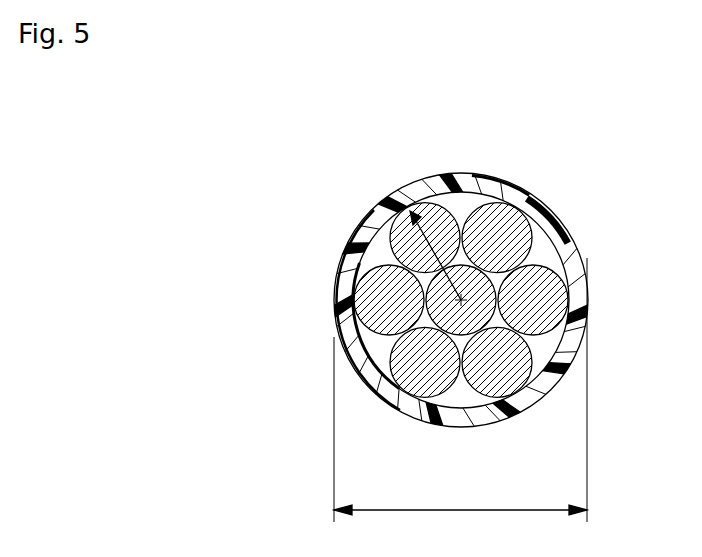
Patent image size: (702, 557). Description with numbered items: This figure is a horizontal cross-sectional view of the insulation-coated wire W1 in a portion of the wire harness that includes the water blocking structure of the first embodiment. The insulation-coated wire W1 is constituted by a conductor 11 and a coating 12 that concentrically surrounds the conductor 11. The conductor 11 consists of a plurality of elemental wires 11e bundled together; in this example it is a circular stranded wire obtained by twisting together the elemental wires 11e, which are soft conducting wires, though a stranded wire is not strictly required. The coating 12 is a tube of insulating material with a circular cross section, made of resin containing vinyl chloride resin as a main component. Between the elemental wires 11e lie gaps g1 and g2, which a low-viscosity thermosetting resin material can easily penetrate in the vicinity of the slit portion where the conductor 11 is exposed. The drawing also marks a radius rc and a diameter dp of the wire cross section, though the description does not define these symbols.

The insulation-coated wire W1 is at (543, 195).
The conductor 11 is at (538, 247).
The elemental wires 11e is at (338, 257).
The coating 12 is at (563, 372).
The gap g1 is at (460, 203).
The gap g2 is at (572, 332).
The radius of conductor rc is at (410, 211).
The diameter of wire dp is at (460, 390).